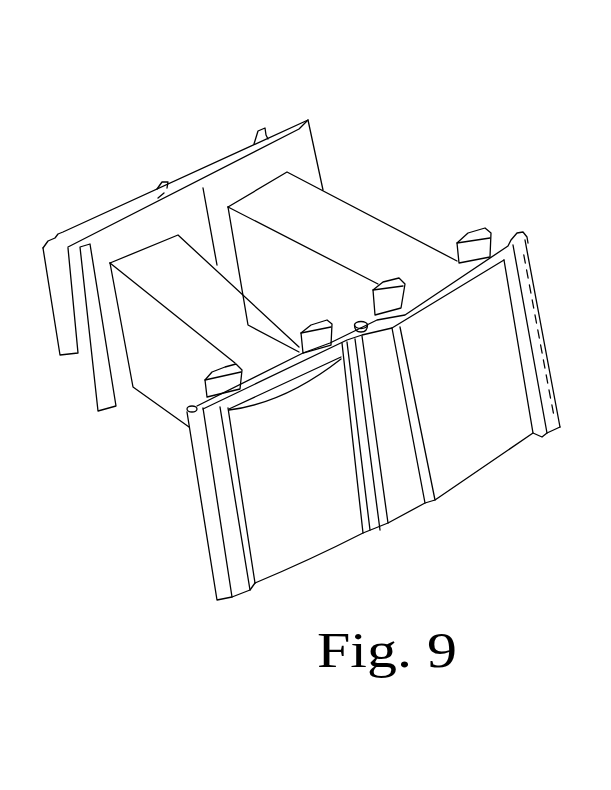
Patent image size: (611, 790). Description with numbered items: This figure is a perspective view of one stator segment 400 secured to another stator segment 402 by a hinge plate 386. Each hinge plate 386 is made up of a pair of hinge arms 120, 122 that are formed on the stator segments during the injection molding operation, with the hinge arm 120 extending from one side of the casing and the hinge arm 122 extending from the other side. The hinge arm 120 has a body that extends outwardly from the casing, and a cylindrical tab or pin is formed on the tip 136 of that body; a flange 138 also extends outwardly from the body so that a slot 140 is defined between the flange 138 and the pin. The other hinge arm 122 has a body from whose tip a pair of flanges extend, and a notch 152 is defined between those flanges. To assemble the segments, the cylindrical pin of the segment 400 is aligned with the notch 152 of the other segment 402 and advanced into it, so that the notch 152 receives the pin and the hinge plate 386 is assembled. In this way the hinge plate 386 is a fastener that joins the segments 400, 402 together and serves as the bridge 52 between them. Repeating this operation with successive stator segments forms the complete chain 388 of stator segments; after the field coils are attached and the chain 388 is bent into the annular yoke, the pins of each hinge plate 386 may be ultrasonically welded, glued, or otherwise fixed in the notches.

The chain 388 is at (458, 132).
The stator segment 400 is at (323, 207).
The stator segment 402 is at (212, 325).
The bridge 52 is at (432, 541).
The hinge arm 122 is at (346, 346).
The notch 152 is at (411, 410).
The hinge arm 120 is at (400, 327).
The hinge plate 386 is at (486, 503).
The slot 140 is at (320, 311).
The tip 136 is at (356, 321).
The flange 138 is at (360, 314).